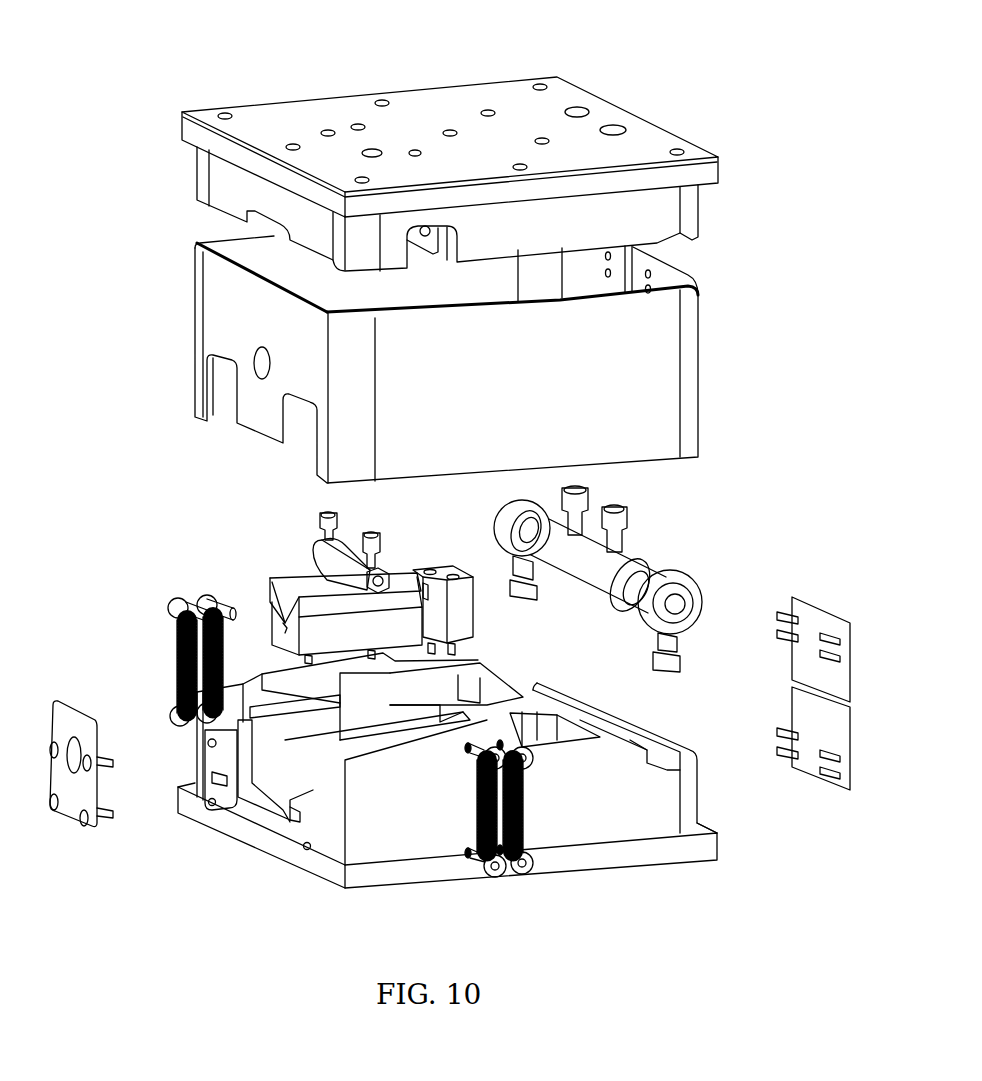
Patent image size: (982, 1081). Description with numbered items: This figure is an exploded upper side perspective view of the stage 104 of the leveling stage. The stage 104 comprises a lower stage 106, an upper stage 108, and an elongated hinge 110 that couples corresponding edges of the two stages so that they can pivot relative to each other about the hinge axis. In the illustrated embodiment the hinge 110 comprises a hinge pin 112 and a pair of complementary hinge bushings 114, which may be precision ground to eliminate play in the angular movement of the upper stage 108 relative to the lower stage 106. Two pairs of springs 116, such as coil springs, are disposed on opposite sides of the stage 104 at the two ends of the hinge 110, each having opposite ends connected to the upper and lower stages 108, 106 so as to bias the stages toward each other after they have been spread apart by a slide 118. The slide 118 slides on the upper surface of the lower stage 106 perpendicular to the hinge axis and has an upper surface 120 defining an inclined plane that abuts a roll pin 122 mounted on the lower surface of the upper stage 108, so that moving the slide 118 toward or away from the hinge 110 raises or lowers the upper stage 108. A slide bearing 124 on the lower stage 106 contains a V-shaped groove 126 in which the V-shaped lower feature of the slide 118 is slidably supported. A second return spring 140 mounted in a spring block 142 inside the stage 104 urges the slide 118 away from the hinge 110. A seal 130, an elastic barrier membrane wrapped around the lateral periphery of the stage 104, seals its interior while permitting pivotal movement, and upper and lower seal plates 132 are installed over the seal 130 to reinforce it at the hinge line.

The stage 104 is at (683, 61).
The lower stage 106 is at (708, 848).
The upper stage 108 is at (707, 172).
The elongated hinge 110 is at (661, 540).
The hinge pin 112 is at (580, 577).
The hinge bushings 114 is at (512, 507).
The springs 116 is at (177, 660).
The slide 118 is at (280, 595).
The upper surface 120 is at (285, 577).
The roll pin 122 is at (345, 560).
The slide bearing 124 is at (333, 643).
The V-shaped groove 126 is at (273, 620).
The seal 130 is at (688, 357).
The seal plates 132 is at (807, 703).
The second return spring 140 is at (403, 577).
The spring block 142 is at (460, 628).